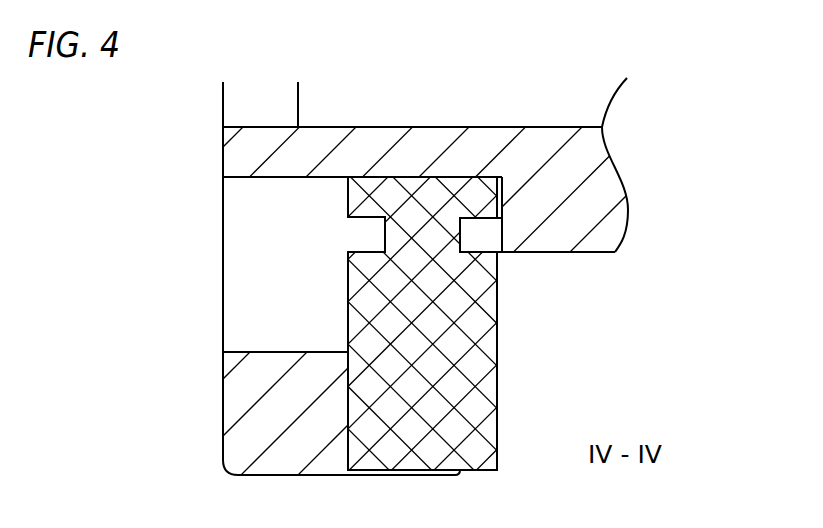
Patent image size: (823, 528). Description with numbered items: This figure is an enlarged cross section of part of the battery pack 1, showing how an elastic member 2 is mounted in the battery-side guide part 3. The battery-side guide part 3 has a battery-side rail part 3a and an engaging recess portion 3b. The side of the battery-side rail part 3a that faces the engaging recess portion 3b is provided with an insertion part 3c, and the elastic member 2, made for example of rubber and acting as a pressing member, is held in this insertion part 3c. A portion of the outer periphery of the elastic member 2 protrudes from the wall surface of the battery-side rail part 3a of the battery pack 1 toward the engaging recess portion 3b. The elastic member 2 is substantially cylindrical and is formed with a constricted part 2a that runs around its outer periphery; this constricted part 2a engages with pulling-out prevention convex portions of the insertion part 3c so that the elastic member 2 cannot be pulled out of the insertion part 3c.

The battery pack 1 is at (617, 165).
The elastic member 2 is at (357, 330).
The constricted part 2a is at (365, 235).
The battery-side guide part 3 is at (295, 455).
The battery-side rail part 3a is at (295, 455).
The engaging recess portion 3b is at (552, 253).
The insertion part 3c is at (350, 404).